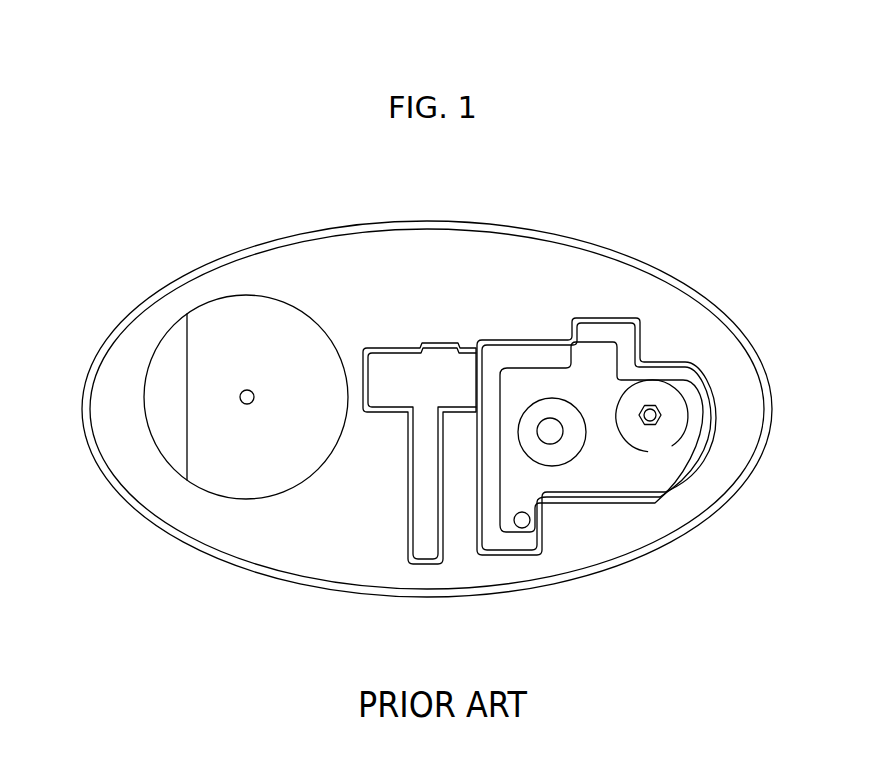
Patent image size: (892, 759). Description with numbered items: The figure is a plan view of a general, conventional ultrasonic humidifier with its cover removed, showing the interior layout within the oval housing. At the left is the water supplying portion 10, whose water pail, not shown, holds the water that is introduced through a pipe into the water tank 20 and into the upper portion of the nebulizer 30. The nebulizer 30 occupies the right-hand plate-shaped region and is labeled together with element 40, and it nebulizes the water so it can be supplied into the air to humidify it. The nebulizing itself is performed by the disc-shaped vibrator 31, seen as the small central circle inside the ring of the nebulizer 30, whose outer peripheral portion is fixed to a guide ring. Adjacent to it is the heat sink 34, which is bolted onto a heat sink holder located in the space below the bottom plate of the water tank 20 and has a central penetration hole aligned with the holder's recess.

The water supplying portion 10 is at (238, 318).
The water tank 20 is at (596, 365).
The nebulizer 30 is at (534, 313).
The bearing ring 40 is at (540, 394).
The vibrator 31 is at (540, 422).
The heat sink 34 is at (572, 438).